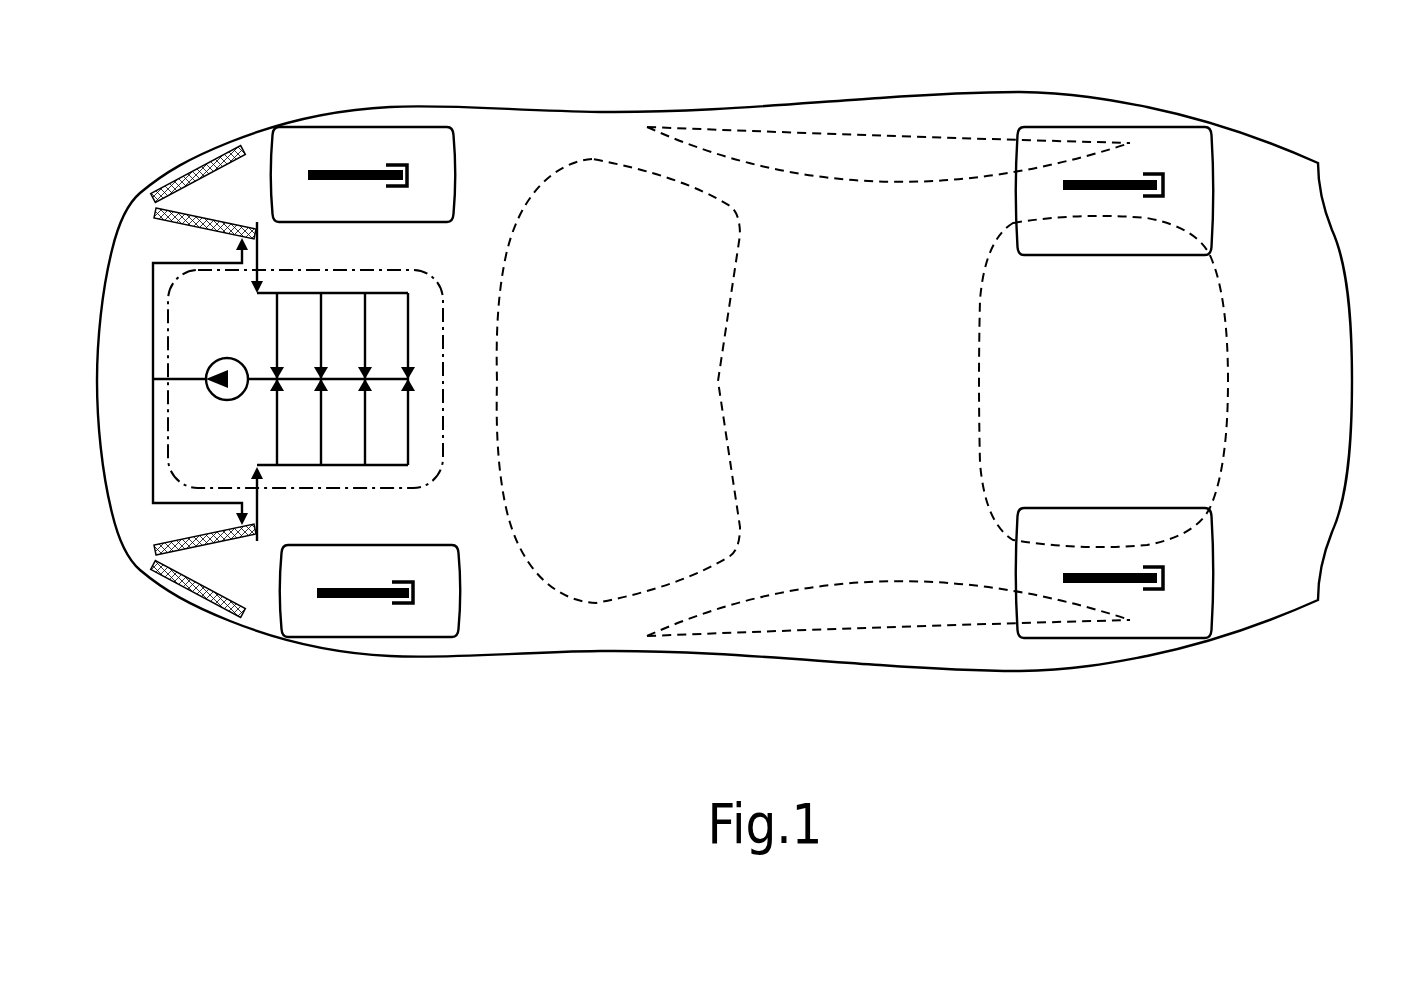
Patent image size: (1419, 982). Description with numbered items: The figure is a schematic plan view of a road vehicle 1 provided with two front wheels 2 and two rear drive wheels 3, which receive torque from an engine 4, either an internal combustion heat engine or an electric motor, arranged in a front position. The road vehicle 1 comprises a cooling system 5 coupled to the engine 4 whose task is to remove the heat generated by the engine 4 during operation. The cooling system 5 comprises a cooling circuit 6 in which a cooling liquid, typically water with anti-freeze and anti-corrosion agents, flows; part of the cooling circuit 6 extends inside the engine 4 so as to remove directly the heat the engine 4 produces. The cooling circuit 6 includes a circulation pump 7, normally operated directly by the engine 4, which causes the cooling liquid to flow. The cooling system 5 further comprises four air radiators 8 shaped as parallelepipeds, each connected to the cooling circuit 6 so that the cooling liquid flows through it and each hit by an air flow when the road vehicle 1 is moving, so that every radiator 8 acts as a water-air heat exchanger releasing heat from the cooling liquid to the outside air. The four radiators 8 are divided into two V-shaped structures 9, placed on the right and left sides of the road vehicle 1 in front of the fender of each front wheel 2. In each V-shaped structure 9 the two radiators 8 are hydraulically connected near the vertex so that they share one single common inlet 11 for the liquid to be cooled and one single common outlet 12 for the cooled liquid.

The road vehicle 1 is at (1296, 703).
The front wheels 2 is at (384, 150).
The rear drive wheels 3 is at (1195, 145).
The engine 4 is at (450, 433).
The cooling system 5 is at (68, 197).
The cooling circuit 6 is at (434, 310).
The circulation pump 7 is at (227, 358).
The air radiators 8 is at (237, 150).
The V-shaped structures 9 is at (182, 120).
The common inlet 11 is at (236, 242).
The common outlet 12 is at (258, 228).